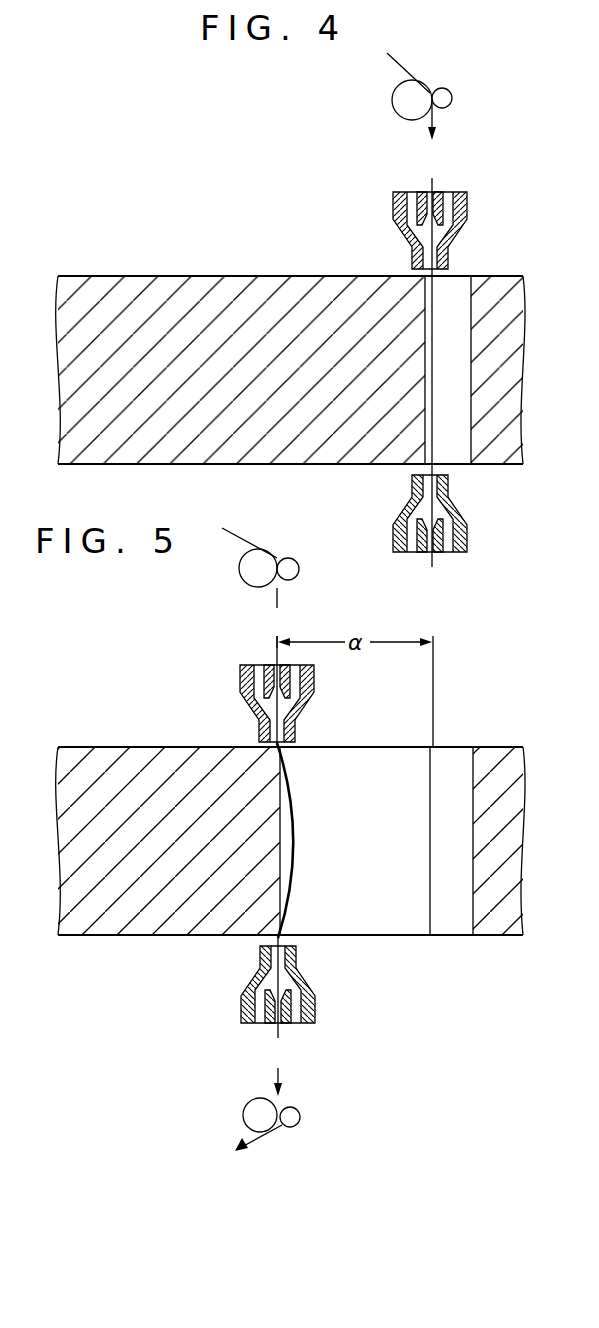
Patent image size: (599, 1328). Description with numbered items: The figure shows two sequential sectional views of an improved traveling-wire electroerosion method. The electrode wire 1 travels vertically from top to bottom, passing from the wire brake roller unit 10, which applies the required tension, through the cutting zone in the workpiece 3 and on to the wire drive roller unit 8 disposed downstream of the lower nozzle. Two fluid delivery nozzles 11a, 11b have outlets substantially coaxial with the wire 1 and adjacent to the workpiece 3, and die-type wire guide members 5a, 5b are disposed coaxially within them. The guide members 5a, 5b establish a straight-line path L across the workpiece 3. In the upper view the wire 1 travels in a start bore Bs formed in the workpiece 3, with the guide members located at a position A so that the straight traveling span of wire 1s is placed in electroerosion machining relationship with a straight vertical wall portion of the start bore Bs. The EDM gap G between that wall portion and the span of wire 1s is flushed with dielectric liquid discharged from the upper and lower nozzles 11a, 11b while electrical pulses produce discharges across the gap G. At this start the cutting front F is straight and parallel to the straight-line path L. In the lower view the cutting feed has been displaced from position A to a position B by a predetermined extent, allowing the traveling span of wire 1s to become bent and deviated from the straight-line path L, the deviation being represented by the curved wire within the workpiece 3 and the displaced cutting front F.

In FIG. 4, the electrode wire 1 is at (399, 63).
In FIG. 5, the electrode wire 1 is at (244, 540).
In FIG. 4, the wire brake roller unit 10 is at (441, 78).
In FIG. 5, the wire brake roller unit 10 is at (281, 549).
In FIG. 4, the workpiece 3 is at (92, 288).
In FIG. 5, the workpiece 3 is at (126, 762).
In FIG. 4, the upper wire guide member 5a is at (417, 212).
In FIG. 5, the upper wire guide member 5a is at (264, 680).
In FIG. 4, the upper fluid delivery nozzle 11a is at (467, 205).
In FIG. 5, the upper fluid delivery nozzle 11a is at (313, 687).
In FIG. 4, the lower wire guide member 5b is at (405, 540).
In FIG. 5, the lower wire guide member 5b is at (262, 1002).
In FIG. 4, the lower fluid delivery nozzle 11b is at (468, 541).
In FIG. 5, the lower fluid delivery nozzle 11b is at (316, 1003).
In FIG. 4, the traveling span of wire 1s is at (436, 313).
In FIG. 5, the traveling span of wire 1s is at (332, 748).
In FIG. 4, the EDM gap G is at (431, 331).
In FIG. 5, the EDM gap G is at (293, 826).
In FIG. 4, the cutting front F is at (431, 359).
In FIG. 5, the cutting front F is at (293, 856).
In FIG. 4, the start bore Bs is at (463, 452).
In FIG. 5, the start bore Bs is at (461, 923).
In FIG. 4, the position A is at (432, 372).
In FIG. 5, the position A is at (433, 680).
In FIG. 5, the position B is at (277, 840).
In FIG. 5, the straight-line path L is at (276, 765).
In FIG. 5, the wire drive roller unit 8 is at (276, 1132).